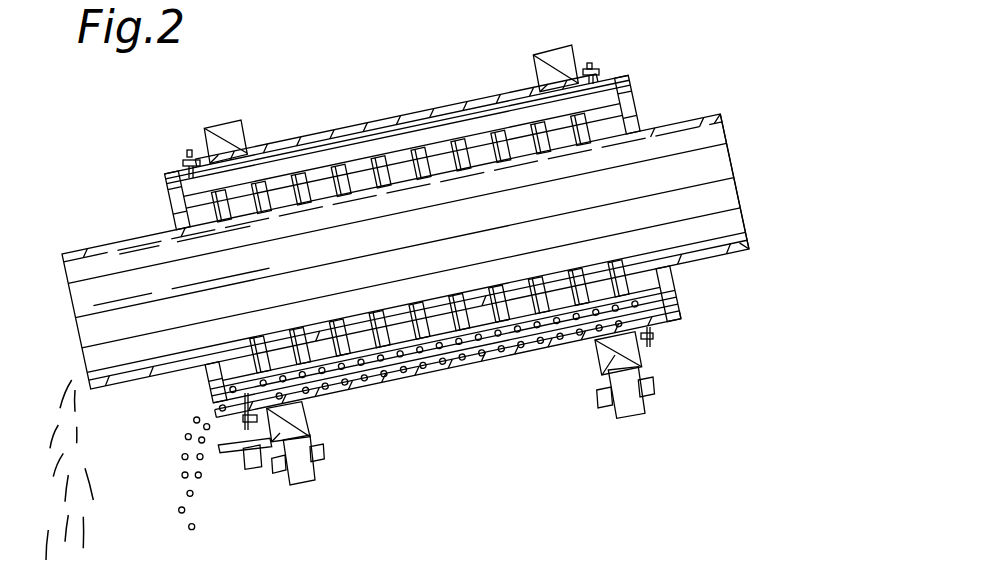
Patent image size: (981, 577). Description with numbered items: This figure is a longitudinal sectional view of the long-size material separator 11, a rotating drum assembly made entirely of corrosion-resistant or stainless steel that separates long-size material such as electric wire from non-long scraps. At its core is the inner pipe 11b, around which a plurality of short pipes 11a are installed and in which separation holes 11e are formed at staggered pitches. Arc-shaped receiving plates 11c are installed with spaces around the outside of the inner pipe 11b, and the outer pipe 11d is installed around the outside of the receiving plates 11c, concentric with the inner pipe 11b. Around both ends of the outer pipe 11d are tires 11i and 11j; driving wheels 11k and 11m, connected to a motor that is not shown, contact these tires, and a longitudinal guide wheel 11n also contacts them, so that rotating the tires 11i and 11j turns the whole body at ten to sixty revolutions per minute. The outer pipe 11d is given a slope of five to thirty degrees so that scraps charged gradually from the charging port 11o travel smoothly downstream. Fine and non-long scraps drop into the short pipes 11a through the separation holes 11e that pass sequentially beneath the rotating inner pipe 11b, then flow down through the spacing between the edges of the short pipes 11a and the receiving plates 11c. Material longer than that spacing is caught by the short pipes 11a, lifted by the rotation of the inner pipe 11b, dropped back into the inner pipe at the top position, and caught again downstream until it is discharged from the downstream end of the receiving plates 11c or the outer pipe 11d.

The long-size material separator 11 is at (652, 57).
The short pipes 11a is at (398, 140).
The inner pipe 11b is at (118, 243).
The receiving plates 11c is at (508, 340).
The outer pipe 11d is at (441, 372).
The separation holes 11e is at (404, 188).
The tire 11i is at (294, 418).
The tire 11j is at (633, 358).
The driving wheel 11k is at (300, 470).
The driving wheel 11m is at (635, 402).
The longitudinal guide wheel 11n is at (225, 453).
The charging port 11o is at (747, 163).